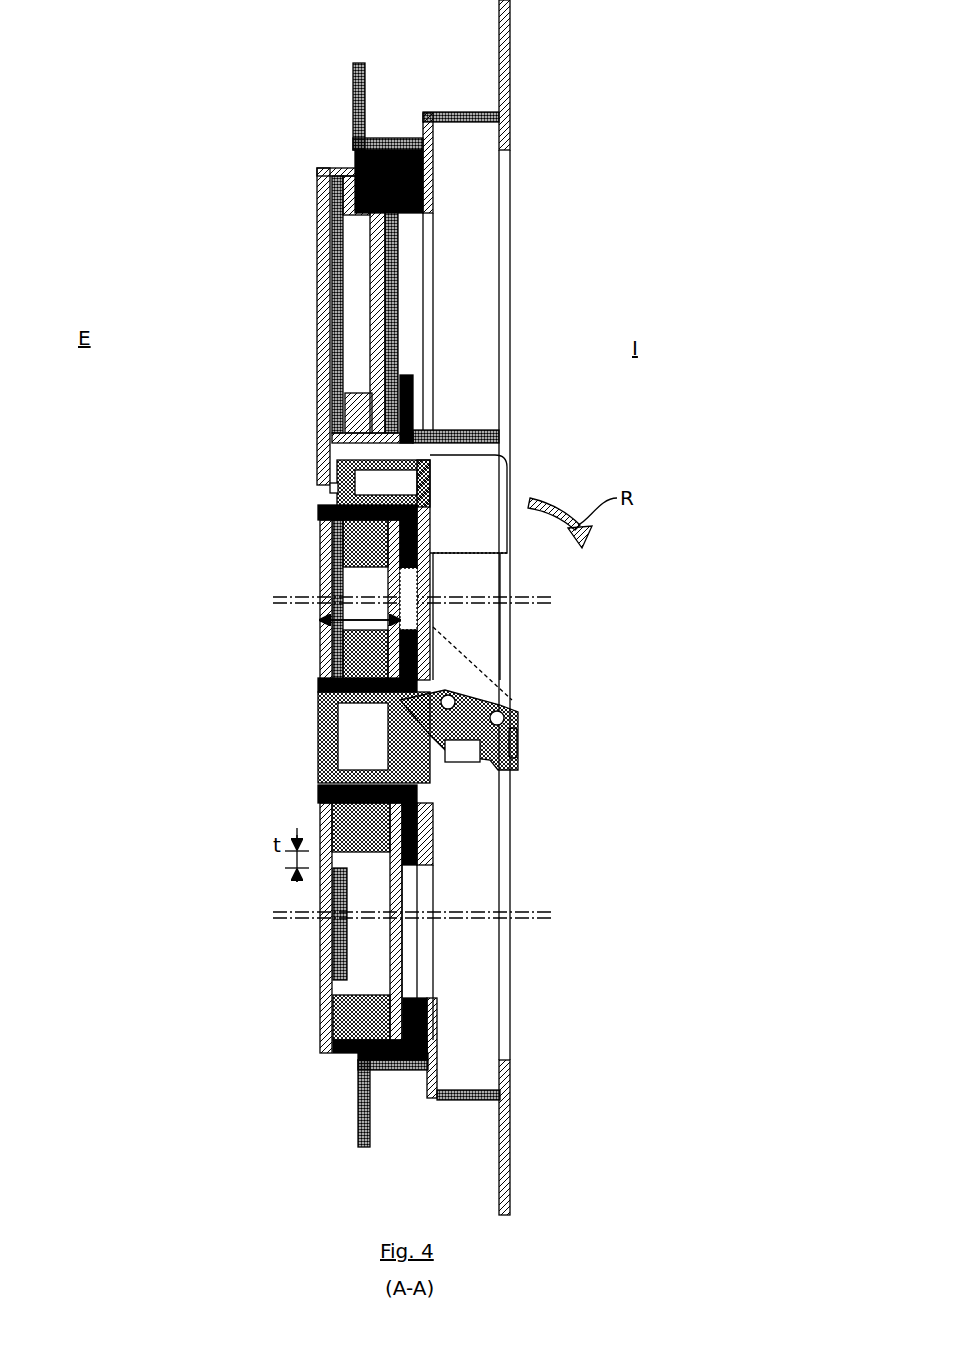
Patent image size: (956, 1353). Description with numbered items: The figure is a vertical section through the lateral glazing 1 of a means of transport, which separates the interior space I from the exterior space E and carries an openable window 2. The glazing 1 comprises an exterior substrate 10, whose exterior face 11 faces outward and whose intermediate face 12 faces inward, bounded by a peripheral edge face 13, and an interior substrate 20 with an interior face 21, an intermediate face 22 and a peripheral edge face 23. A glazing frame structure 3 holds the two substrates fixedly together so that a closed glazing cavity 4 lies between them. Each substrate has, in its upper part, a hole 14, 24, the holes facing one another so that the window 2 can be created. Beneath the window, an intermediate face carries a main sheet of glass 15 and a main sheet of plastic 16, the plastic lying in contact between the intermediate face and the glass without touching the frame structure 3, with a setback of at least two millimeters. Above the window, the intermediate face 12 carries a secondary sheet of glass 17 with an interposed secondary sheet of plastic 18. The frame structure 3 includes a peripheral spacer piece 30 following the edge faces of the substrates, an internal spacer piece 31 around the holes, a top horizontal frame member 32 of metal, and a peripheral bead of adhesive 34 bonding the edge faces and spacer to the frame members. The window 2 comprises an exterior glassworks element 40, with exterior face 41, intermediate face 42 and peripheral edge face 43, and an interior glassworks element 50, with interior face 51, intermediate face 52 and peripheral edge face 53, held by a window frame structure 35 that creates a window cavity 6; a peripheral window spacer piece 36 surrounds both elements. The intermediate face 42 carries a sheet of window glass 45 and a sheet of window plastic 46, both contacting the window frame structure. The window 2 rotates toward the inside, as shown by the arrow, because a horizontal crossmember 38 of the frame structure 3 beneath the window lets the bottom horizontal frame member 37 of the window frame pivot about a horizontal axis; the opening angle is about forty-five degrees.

The lateral glazing 1 is at (266, 42).
The openable window 2 is at (272, 482).
The glazing frame structure 3 is at (398, 76).
The glazing cavity 4 is at (346, 294).
The window cavity 6 is at (330, 594).
The exterior substrate 10 is at (322, 200).
The exterior face 11 is at (336, 242).
The intermediate face 12 is at (335, 295).
The peripheral edge face 13 is at (345, 180).
The hole 14 is at (332, 488).
The main sheet of glass 15 is at (337, 932).
The main sheet of plastic 16 is at (333, 890).
The secondary sheet of glass 17 is at (345, 403).
The secondary sheet of plastic 18 is at (335, 367).
The interior substrate 20 is at (395, 897).
The interior face 21 is at (400, 932).
The intermediate face 22 is at (392, 973).
The peripheral edge face 23 is at (425, 198).
The hole 24 is at (432, 440).
The peripheral spacer piece 30 is at (355, 185).
The internal spacer piece 31 is at (352, 822).
The top horizontal frame member 32 is at (445, 112).
The peripheral bead of adhesive 34 is at (385, 1065).
The window frame structure 35 is at (420, 478).
The peripheral window spacer piece 36 is at (435, 548).
The bottom horizontal frame member 37 is at (450, 690).
The horizontal crossmember 38 is at (517, 740).
The exterior glassworks element 40 is at (327, 548).
The exterior face 41 is at (330, 612).
The intermediate face 42 is at (330, 642).
The peripheral edge face 43 is at (330, 672).
The sheet of window glass 45 is at (335, 592).
The sheet of window plastic 46 is at (325, 537).
The interior glassworks element 50 is at (407, 590).
The interior face 51 is at (400, 598).
The intermediate face 52 is at (430, 640).
The peripheral edge face 53 is at (428, 515).